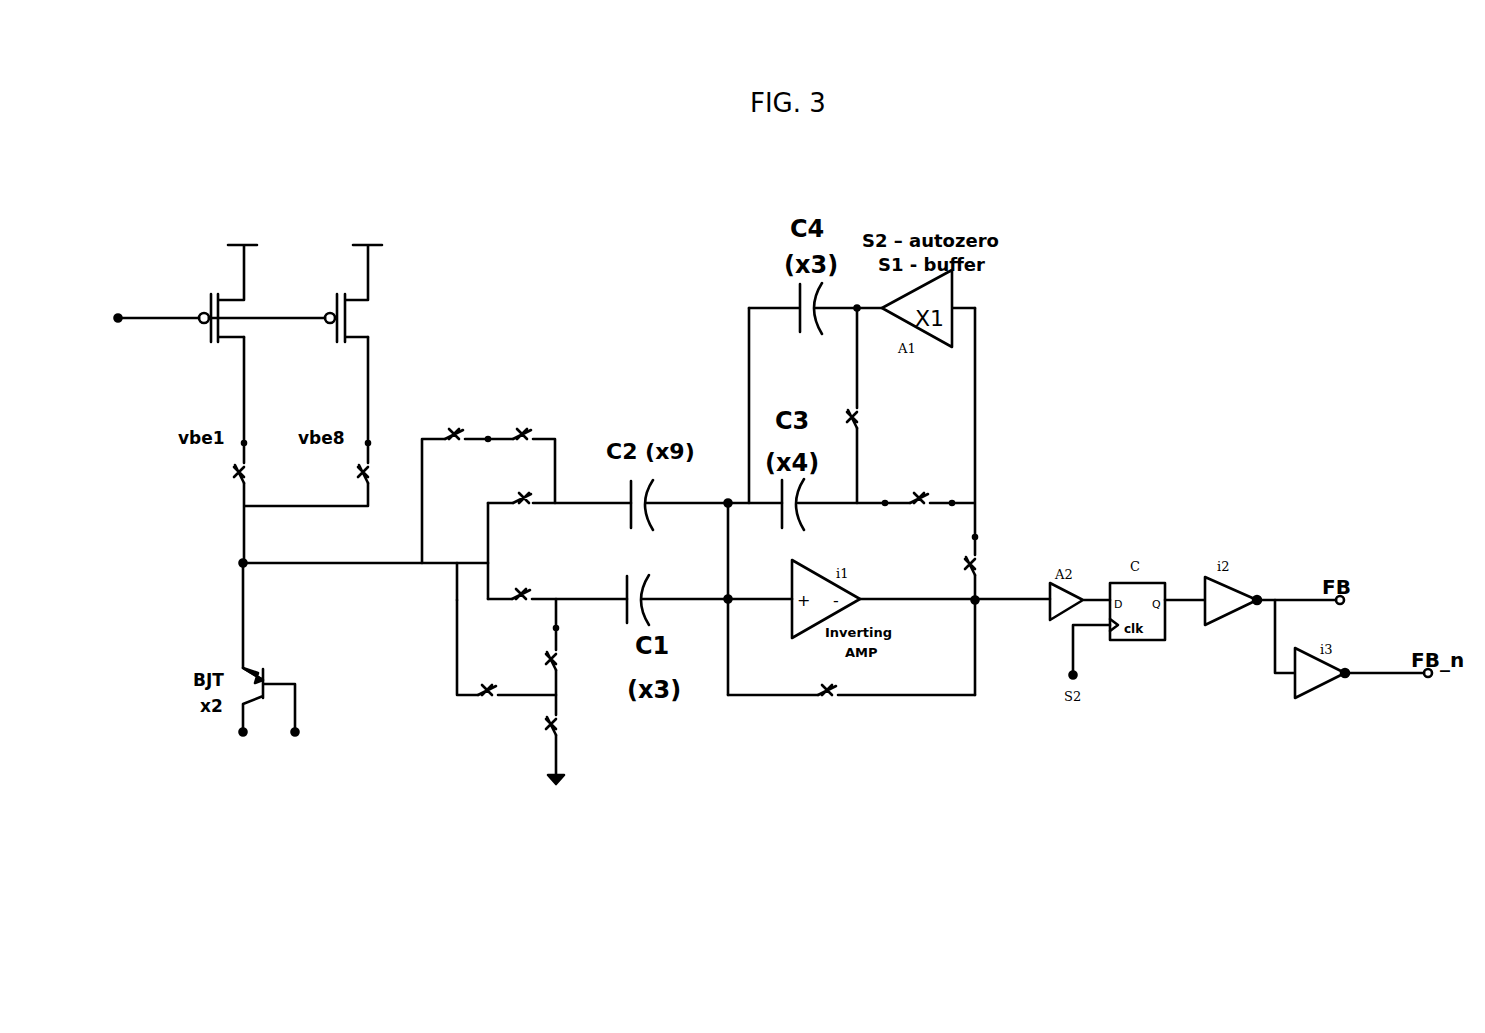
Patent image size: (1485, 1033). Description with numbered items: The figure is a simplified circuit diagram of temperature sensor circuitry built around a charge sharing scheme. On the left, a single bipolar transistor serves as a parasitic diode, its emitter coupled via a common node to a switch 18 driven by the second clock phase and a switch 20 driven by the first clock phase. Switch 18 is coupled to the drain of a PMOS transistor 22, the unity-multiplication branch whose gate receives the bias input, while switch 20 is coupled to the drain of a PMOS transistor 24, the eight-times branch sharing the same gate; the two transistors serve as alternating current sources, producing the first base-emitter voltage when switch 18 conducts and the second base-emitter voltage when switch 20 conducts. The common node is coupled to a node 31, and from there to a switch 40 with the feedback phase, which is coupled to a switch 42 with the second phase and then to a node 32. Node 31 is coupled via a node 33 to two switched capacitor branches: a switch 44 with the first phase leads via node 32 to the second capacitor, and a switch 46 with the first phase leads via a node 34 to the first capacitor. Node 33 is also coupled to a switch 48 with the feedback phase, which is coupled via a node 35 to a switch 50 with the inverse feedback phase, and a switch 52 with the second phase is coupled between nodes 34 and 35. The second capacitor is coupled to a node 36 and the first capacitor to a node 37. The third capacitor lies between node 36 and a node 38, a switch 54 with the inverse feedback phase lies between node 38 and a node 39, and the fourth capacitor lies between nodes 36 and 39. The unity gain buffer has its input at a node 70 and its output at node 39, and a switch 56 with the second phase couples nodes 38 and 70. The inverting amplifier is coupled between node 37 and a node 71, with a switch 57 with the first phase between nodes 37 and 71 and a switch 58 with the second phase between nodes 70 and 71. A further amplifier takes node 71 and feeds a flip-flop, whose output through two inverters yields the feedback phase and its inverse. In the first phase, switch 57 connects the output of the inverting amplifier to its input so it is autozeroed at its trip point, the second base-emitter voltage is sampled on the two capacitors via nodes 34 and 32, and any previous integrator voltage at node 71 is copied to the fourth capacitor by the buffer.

The switch 18 is at (238, 480).
The switch 20 is at (344, 483).
The PMOS transistor 22 is at (177, 298).
The PMOS transistor 24 is at (295, 300).
The node 31 is at (364, 560).
The node 32 is at (559, 493).
The node 33 is at (448, 572).
The node 34 is at (557, 614).
The node 35 is at (518, 651).
The node 36 is at (741, 598).
The node 37 is at (746, 589).
The node 38 is at (854, 514).
The node 39 is at (856, 345).
The switch 40 is at (451, 406).
The switch 42 is at (525, 406).
The switch 44 is at (526, 523).
The switch 46 is at (513, 609).
The switch 48 is at (483, 714).
The switch 50 is at (578, 741).
The switch 52 is at (570, 661).
The switch 54 is at (861, 442).
The switch 56 is at (920, 504).
The switch 57 is at (851, 718).
The switch 58 is at (969, 567).
The node 70 is at (966, 431).
The node 71 is at (955, 635).